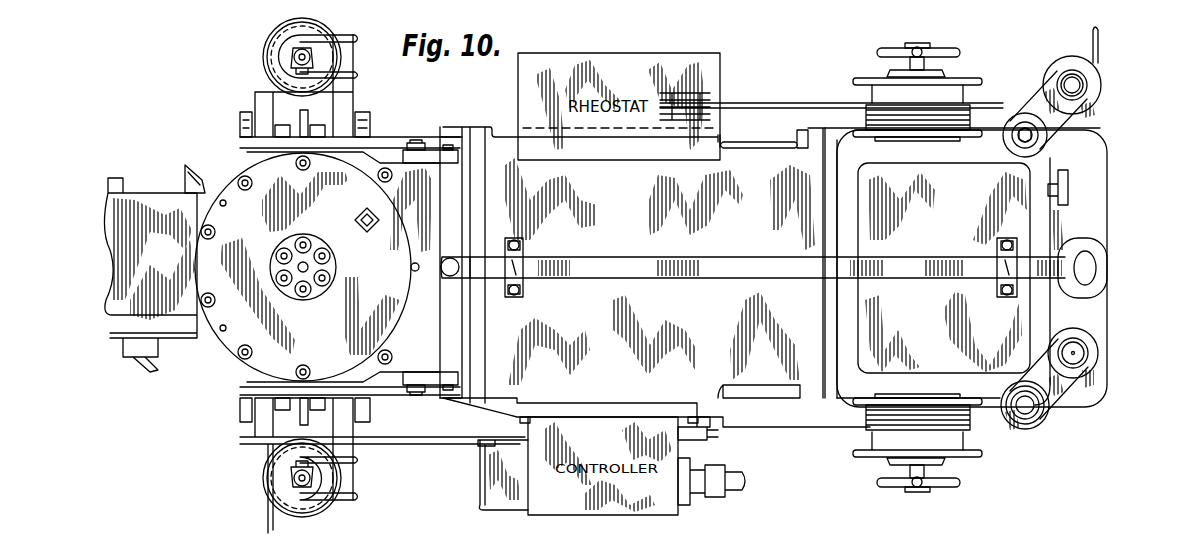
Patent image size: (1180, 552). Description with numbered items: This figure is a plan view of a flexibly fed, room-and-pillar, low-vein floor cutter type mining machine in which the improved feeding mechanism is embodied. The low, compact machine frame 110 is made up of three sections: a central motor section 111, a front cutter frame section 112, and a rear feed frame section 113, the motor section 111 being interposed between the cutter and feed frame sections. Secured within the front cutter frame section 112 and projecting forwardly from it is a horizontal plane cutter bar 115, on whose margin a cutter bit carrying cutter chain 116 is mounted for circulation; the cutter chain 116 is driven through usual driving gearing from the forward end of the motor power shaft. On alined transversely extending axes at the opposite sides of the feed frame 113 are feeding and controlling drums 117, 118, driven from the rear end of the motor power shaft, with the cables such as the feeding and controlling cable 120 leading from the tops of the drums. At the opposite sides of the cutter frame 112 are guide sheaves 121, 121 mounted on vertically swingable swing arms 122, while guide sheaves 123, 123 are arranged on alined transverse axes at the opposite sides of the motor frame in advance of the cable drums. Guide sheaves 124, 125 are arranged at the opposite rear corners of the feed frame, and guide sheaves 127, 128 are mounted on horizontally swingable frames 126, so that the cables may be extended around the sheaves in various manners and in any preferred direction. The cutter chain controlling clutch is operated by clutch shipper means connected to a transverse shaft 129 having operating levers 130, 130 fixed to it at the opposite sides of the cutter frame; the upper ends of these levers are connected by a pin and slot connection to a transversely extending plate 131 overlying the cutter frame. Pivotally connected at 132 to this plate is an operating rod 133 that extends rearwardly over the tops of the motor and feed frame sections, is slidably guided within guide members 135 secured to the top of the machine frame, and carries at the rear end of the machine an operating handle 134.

The machine frame 110 is at (712, 420).
The central motor section 111 is at (492, 140).
The front cutter frame section 112 is at (365, 180).
The rear feed frame section 113 is at (845, 157).
The cutter bar 115 is at (143, 205).
The cutter chain 116 is at (199, 168).
The feeding and controlling drum 117 is at (868, 470).
The feeding and controlling drum 118 is at (878, 98).
The feeding and controlling cable 120 is at (1098, 55).
The guide sheave 121 is at (266, 49).
The swing arm 122 is at (268, 100).
The guide sheave 123 is at (712, 95).
The guide sheave 124 is at (1021, 426).
The guide sheave 125 is at (1100, 148).
The horizontally swingable frame 126 is at (1058, 118).
The guide sheave 127 is at (1078, 378).
The guide sheave 128 is at (1087, 88).
The transverse shaft 129 is at (416, 138).
The operating lever 130 is at (433, 157).
The transversely extending plate 131 is at (447, 336).
The pivotal connection 132 is at (447, 270).
The operating rod 133 is at (725, 265).
The operating handle 134 is at (1100, 281).
The guide member 135 is at (999, 286).